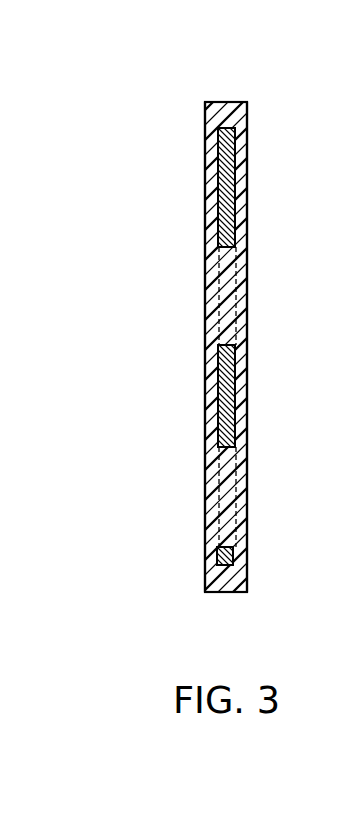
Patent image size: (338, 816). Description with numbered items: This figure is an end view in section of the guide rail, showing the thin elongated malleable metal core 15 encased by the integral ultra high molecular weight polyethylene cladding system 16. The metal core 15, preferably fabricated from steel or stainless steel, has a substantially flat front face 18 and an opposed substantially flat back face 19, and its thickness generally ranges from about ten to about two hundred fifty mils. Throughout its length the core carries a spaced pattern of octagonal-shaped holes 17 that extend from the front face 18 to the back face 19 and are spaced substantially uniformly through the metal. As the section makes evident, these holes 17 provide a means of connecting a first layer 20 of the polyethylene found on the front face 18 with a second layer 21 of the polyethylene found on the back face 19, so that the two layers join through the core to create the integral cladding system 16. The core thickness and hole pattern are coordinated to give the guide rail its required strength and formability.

The metal core 15 is at (233, 159).
The UHMW polyethylene cladding system 16 is at (219, 104).
The octagonal-shaped holes 17 is at (231, 273).
The front face 18 is at (245, 460).
The back face 19 is at (206, 262).
The first layer 20 is at (237, 507).
The second layer 21 is at (206, 312).